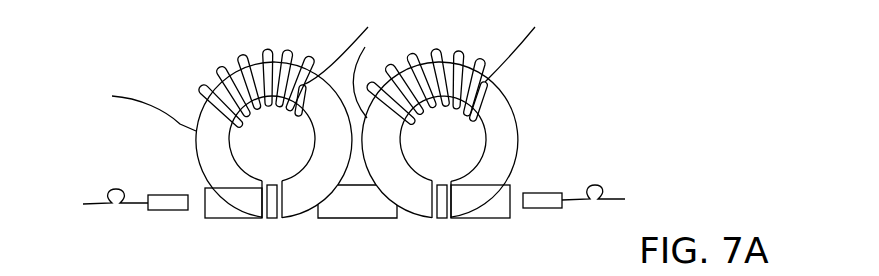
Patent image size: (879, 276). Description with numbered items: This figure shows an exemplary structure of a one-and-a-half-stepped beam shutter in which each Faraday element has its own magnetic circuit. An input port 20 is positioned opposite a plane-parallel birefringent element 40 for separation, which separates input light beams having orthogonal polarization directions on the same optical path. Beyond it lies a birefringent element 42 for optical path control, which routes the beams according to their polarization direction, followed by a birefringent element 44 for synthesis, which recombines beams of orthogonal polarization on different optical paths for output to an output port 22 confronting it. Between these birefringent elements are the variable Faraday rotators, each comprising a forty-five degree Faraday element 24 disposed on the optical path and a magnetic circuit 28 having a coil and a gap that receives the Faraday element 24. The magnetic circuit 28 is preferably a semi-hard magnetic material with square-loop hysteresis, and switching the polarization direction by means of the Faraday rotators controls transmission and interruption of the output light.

The magnetic circuit 28 is at (201, 153).
The Faraday element 24 is at (272, 210).
The birefringent element for separation 40 is at (221, 212).
The birefringent element for optical path control 42 is at (362, 212).
The birefringent element for synthesis 44 is at (497, 212).
The input port 20 is at (167, 203).
The output port 22 is at (545, 202).